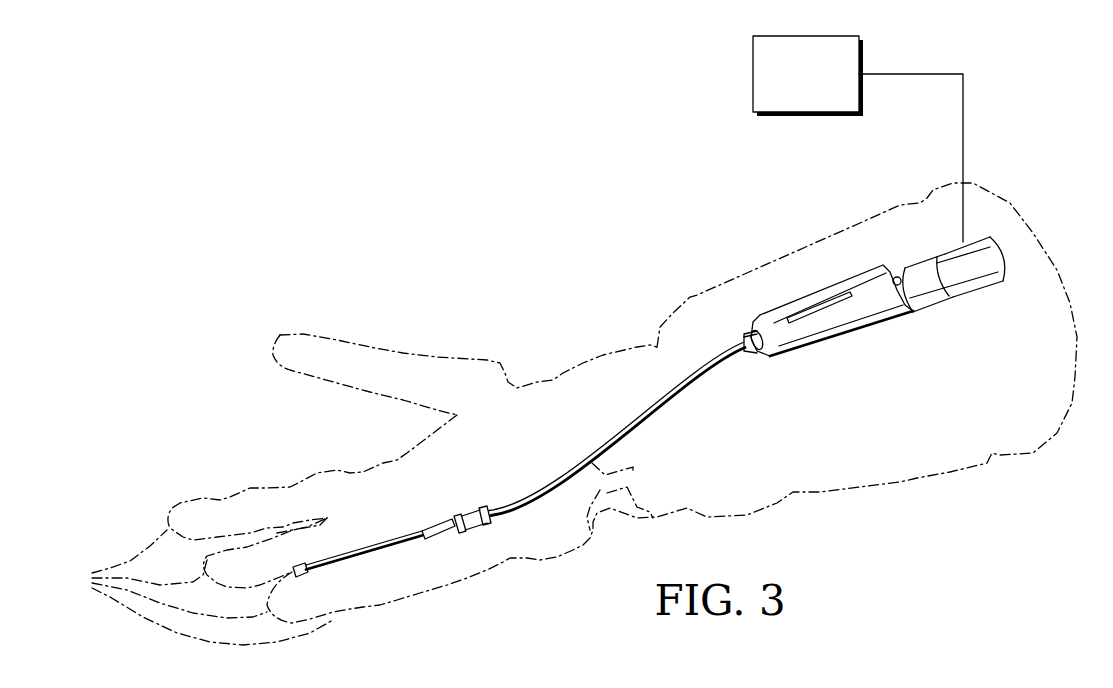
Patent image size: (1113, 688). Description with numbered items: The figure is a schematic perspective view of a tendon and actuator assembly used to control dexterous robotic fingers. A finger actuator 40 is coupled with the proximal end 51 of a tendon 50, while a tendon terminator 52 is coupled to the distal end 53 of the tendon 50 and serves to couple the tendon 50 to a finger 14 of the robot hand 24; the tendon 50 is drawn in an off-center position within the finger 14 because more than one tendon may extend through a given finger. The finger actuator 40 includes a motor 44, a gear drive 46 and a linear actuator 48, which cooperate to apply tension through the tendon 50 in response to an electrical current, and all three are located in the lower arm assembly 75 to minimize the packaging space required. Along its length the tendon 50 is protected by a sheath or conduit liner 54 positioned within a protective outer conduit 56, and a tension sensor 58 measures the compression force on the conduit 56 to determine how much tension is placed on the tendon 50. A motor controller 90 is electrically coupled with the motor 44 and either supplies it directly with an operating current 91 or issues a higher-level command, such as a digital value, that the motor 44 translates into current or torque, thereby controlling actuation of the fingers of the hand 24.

The finger 14 is at (196, 587).
The hand 24 is at (472, 457).
The finger actuator 40 is at (767, 291).
The motor 44 is at (978, 258).
The gear drive 46 is at (925, 283).
The linear actuator 48 is at (840, 325).
The tendon 50 is at (360, 557).
The proximal end 51 is at (735, 376).
The tendon terminator 52 is at (298, 562).
The distal end 53 is at (333, 572).
The conduit liner 54 is at (437, 525).
The conduit 56 is at (650, 415).
The tension sensor 58 is at (483, 530).
The lower arm assembly 75 is at (820, 243).
The motor controller 90 is at (821, 88).
The operating current 91 is at (963, 137).